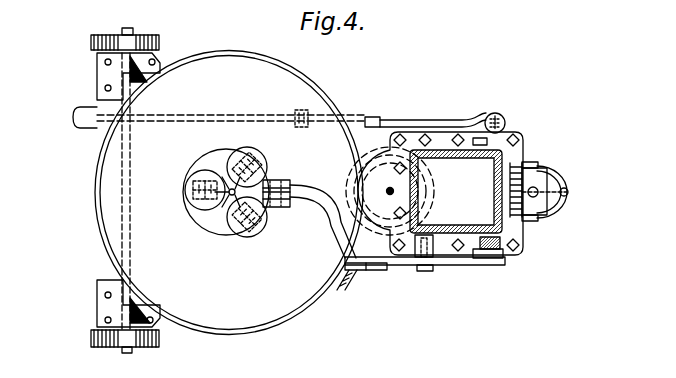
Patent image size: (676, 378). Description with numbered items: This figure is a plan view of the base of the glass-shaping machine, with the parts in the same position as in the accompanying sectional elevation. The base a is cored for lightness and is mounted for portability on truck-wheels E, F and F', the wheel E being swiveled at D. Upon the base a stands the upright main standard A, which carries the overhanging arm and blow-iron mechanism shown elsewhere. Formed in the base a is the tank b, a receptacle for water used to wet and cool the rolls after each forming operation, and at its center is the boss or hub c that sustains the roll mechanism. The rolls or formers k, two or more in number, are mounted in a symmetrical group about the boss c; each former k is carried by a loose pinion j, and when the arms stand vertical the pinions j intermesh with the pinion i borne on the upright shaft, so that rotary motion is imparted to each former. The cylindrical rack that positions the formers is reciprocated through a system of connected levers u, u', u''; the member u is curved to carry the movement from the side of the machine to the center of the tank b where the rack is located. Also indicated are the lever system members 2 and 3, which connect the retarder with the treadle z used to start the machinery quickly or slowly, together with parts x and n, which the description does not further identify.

The truck-wheel F' is at (106, 64).
The truck-wheel F is at (106, 324).
The treadle z is at (70, 117).
The base a is at (65, 191).
The tank b is at (229, 193).
The lever system member 3 is at (238, 108).
The lever system member 2 is at (442, 114).
The upright main standard A is at (440, 193).
The pivot x is at (390, 191).
The lever u is at (323, 237).
The lever u' is at (425, 276).
The lever u'' is at (439, 265).
The tab n is at (492, 264).
The central boss c is at (226, 201).
The former k is at (285, 214).
The loose pinion j is at (190, 193).
The pinion i is at (222, 170).
The swivel D is at (538, 215).
The truck-wheel E is at (556, 192).